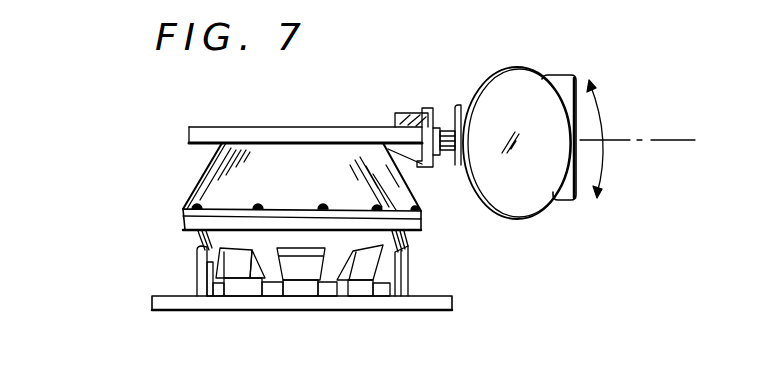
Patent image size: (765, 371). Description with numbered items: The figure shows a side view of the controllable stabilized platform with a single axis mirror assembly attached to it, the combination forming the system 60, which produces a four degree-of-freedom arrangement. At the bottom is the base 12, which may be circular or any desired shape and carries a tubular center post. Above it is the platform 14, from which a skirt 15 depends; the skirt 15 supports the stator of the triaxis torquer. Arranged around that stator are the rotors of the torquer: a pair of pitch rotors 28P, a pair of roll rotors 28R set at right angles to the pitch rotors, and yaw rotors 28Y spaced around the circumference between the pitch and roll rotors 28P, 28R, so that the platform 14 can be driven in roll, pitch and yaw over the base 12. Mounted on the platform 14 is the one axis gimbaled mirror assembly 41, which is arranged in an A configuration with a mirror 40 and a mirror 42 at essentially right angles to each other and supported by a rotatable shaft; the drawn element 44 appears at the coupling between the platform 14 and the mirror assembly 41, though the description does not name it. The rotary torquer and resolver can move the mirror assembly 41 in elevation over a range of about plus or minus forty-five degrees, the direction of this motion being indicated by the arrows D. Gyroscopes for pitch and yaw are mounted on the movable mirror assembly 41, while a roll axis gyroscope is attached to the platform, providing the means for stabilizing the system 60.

The system 60 is at (150, 199).
The base 12 is at (165, 306).
The platform 14 is at (275, 132).
The skirt 15 is at (210, 182).
The roll rotors 28R is at (200, 271).
The yaw rotors 28Y is at (240, 286).
The pitch rotors 28P is at (303, 286).
The mirror 40 is at (515, 78).
The one axis gimbaled mirror assembly 41 is at (545, 232).
The mirror 42 is at (556, 80).
The shaft 44 is at (450, 130).
The arrows D is at (637, 139).